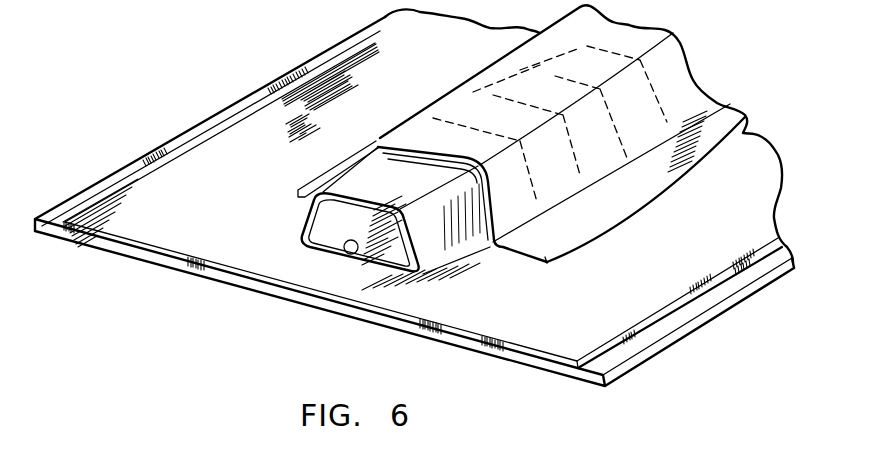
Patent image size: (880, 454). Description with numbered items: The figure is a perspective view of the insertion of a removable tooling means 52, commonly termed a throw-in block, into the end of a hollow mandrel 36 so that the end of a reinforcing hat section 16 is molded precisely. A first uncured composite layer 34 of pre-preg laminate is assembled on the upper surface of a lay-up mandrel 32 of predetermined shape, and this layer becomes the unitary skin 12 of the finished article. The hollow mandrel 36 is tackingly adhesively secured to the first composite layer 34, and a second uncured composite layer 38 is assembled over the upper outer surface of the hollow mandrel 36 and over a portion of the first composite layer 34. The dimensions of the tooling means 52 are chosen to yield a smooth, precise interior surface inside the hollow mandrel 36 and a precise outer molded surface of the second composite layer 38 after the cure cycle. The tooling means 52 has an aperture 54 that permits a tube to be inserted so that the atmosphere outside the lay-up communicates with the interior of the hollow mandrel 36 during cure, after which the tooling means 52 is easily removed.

The unitary skin 12 is at (397, 316).
The reinforcing hat section 16 is at (447, 86).
The lay-up mandrel 32 is at (143, 263).
The first uncured composite layer 34 is at (643, 328).
The hollow mandrel 36 is at (488, 233).
The second uncured composite layer 38 is at (600, 237).
The tooling means 52 is at (302, 197).
The aperture 54 is at (348, 254).